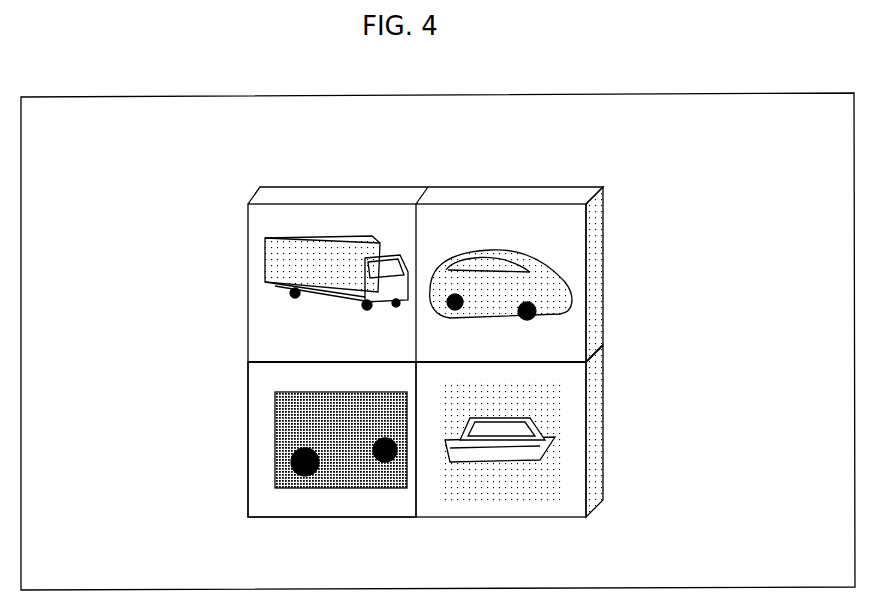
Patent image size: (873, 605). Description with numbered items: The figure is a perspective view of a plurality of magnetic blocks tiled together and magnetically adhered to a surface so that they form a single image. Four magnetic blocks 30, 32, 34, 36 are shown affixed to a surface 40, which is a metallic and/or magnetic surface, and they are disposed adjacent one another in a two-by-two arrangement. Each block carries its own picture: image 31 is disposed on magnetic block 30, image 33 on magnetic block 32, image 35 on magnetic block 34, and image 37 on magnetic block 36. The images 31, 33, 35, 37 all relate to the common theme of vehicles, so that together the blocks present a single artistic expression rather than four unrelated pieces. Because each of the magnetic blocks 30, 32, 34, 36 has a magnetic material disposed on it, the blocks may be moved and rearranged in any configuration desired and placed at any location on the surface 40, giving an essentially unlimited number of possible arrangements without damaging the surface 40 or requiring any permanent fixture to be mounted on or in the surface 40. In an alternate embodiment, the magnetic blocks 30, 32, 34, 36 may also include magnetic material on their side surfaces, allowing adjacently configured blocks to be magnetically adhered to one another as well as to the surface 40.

The magnetic block 30 is at (275, 216).
The image 31 is at (288, 313).
The magnetic block 32 is at (573, 196).
The image 33 is at (555, 272).
The magnetic block 34 is at (260, 466).
The image 35 is at (288, 420).
The magnetic block 36 is at (592, 479).
The image 37 is at (548, 413).
The surface 40 is at (767, 218).